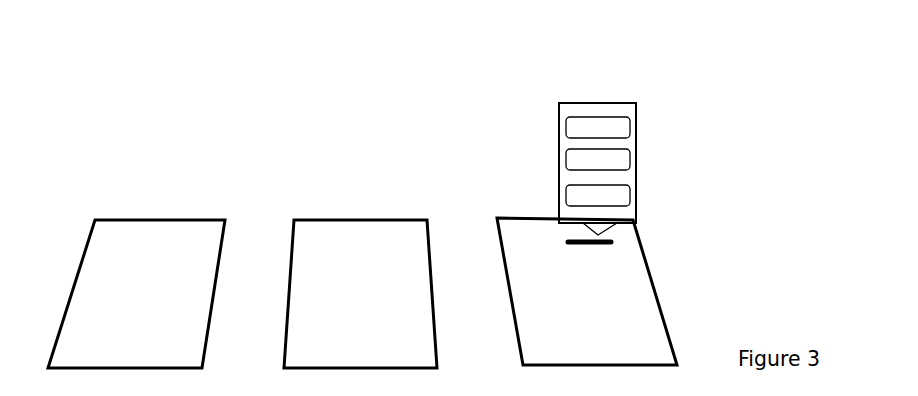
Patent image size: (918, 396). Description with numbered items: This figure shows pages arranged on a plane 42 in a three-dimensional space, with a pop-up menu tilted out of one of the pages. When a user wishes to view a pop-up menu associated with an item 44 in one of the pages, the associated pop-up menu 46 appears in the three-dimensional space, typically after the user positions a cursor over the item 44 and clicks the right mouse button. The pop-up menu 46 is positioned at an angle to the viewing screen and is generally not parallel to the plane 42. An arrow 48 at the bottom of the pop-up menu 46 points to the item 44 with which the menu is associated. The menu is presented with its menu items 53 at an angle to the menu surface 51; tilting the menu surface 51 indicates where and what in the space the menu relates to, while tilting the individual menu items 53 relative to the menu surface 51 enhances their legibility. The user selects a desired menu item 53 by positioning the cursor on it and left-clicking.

The plane 42 is at (121, 171).
The menu surface 51 is at (583, 103).
The pop-up menu 46 is at (620, 130).
The menu item 53 is at (597, 163).
The arrow 48 is at (600, 226).
The item 44 is at (608, 245).